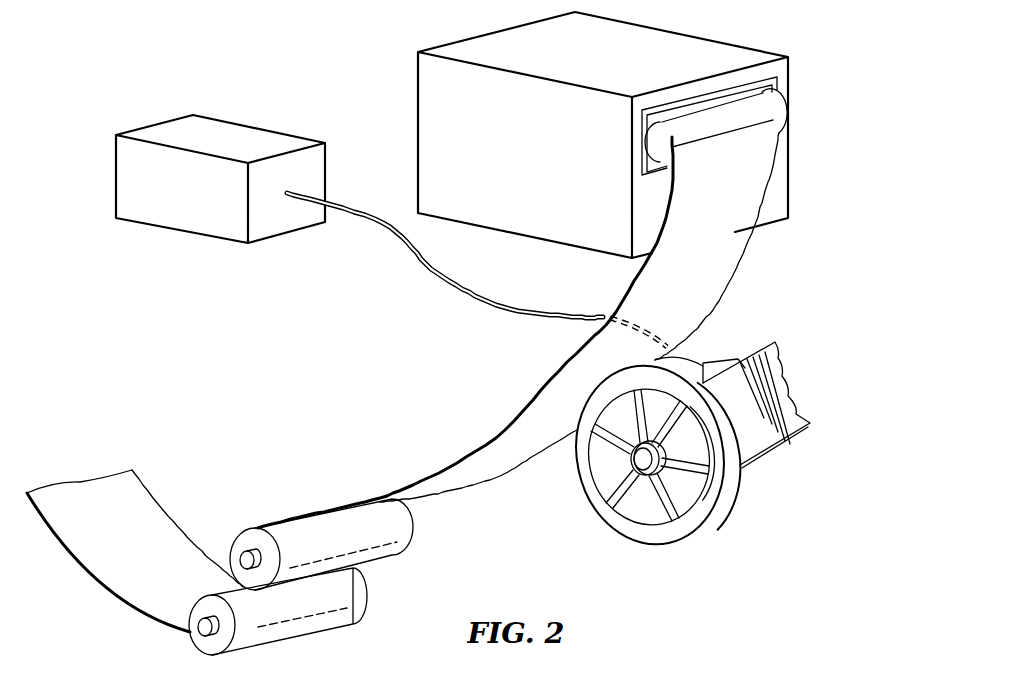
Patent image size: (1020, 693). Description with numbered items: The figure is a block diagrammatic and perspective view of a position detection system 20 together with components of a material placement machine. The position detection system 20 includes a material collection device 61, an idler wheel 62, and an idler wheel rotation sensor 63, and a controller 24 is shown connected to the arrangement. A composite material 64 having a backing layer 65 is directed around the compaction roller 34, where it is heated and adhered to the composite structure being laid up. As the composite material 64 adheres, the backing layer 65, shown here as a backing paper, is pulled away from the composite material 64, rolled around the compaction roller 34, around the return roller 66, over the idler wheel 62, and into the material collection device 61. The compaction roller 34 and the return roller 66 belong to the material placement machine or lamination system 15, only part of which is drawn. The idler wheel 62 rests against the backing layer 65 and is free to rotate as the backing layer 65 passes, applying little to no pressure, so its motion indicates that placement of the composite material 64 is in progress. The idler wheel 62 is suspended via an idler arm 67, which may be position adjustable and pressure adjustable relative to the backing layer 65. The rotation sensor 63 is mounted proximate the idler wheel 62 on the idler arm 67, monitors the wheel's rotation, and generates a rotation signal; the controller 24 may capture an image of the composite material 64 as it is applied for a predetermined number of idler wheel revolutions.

The position detection system 20 is at (252, 52).
The controller 24 is at (116, 177).
The material collection device 61 is at (418, 133).
The idler wheel 62 is at (610, 513).
The idler wheel rotation sensor 63 is at (723, 362).
The idler arm 67 is at (757, 443).
The backing layer 65 is at (493, 467).
The return roller 66 is at (383, 550).
The compaction roller 34 is at (365, 595).
The lamination system 15 is at (87, 573).
The composite material 64 is at (115, 597).